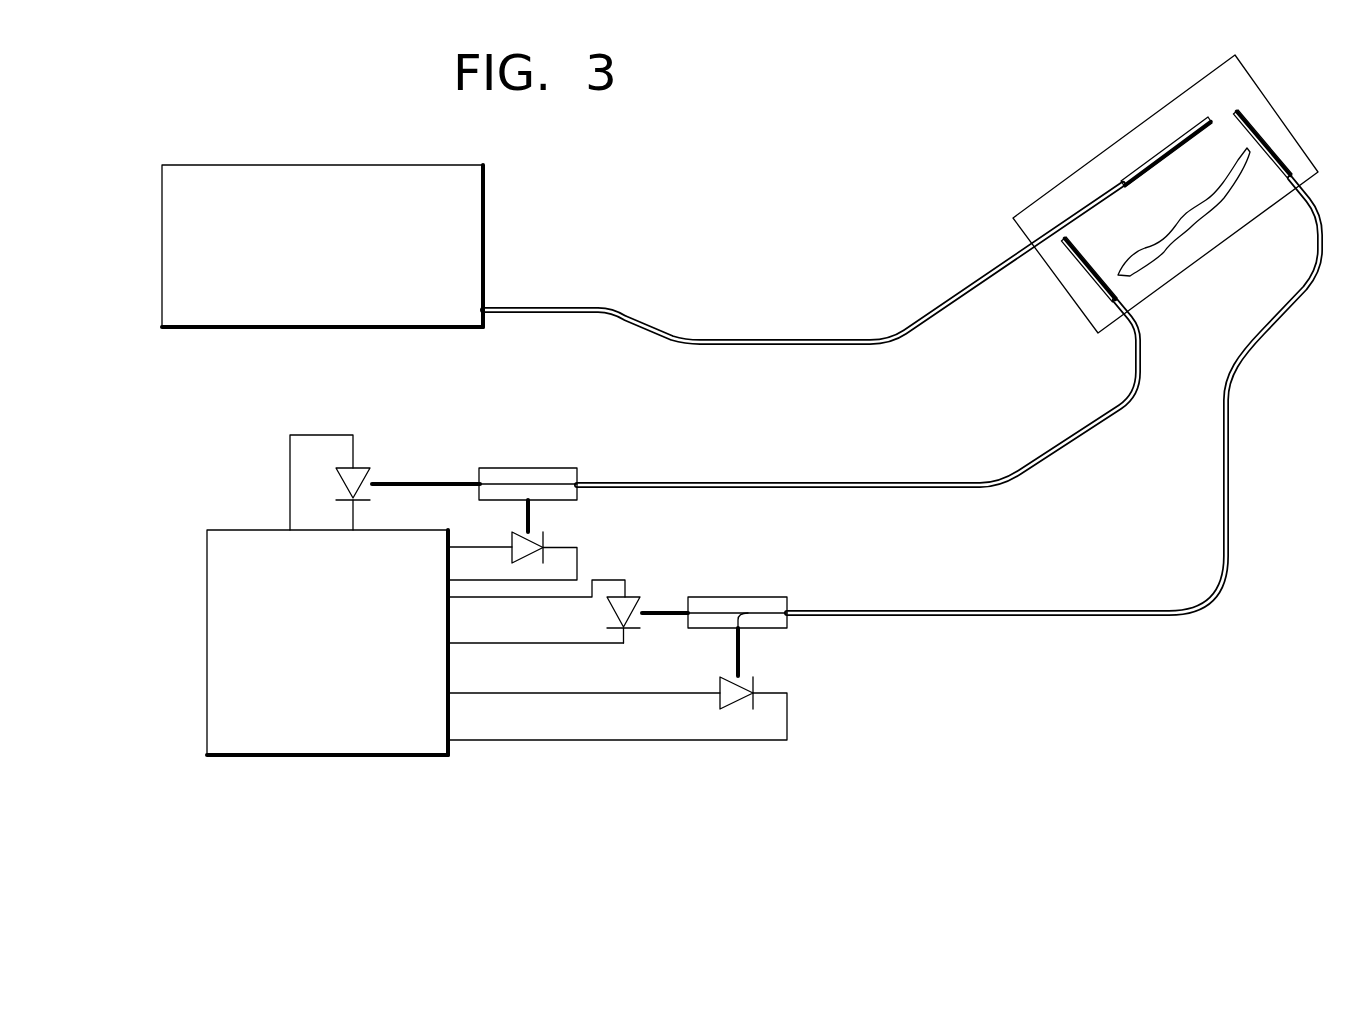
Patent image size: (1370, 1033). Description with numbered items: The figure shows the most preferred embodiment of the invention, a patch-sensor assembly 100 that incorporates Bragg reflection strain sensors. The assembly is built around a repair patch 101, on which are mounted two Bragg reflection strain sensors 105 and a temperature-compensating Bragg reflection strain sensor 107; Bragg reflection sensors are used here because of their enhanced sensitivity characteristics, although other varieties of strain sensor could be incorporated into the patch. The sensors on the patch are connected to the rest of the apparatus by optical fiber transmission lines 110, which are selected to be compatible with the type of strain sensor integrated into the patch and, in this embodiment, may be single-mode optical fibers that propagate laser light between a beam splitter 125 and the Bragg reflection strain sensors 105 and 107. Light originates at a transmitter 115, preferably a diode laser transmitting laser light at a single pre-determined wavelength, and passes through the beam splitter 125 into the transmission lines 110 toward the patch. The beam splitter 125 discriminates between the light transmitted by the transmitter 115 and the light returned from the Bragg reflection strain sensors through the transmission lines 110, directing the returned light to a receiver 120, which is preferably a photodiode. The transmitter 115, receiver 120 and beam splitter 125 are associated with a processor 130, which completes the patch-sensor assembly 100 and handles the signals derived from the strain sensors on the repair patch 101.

The patch-sensor assembly 100 is at (1169, 179).
The repair patch 101 is at (1100, 148).
The Bragg reflection strain sensors 105 is at (1270, 140).
The temperature-compensating Bragg reflection strain sensor 107 is at (1166, 135).
The optical fiber transmission lines 110 is at (923, 332).
The transmitter 115 is at (578, 560).
The receiver 120 is at (362, 468).
The beam splitter 125 is at (498, 468).
The processor 130 is at (320, 167).